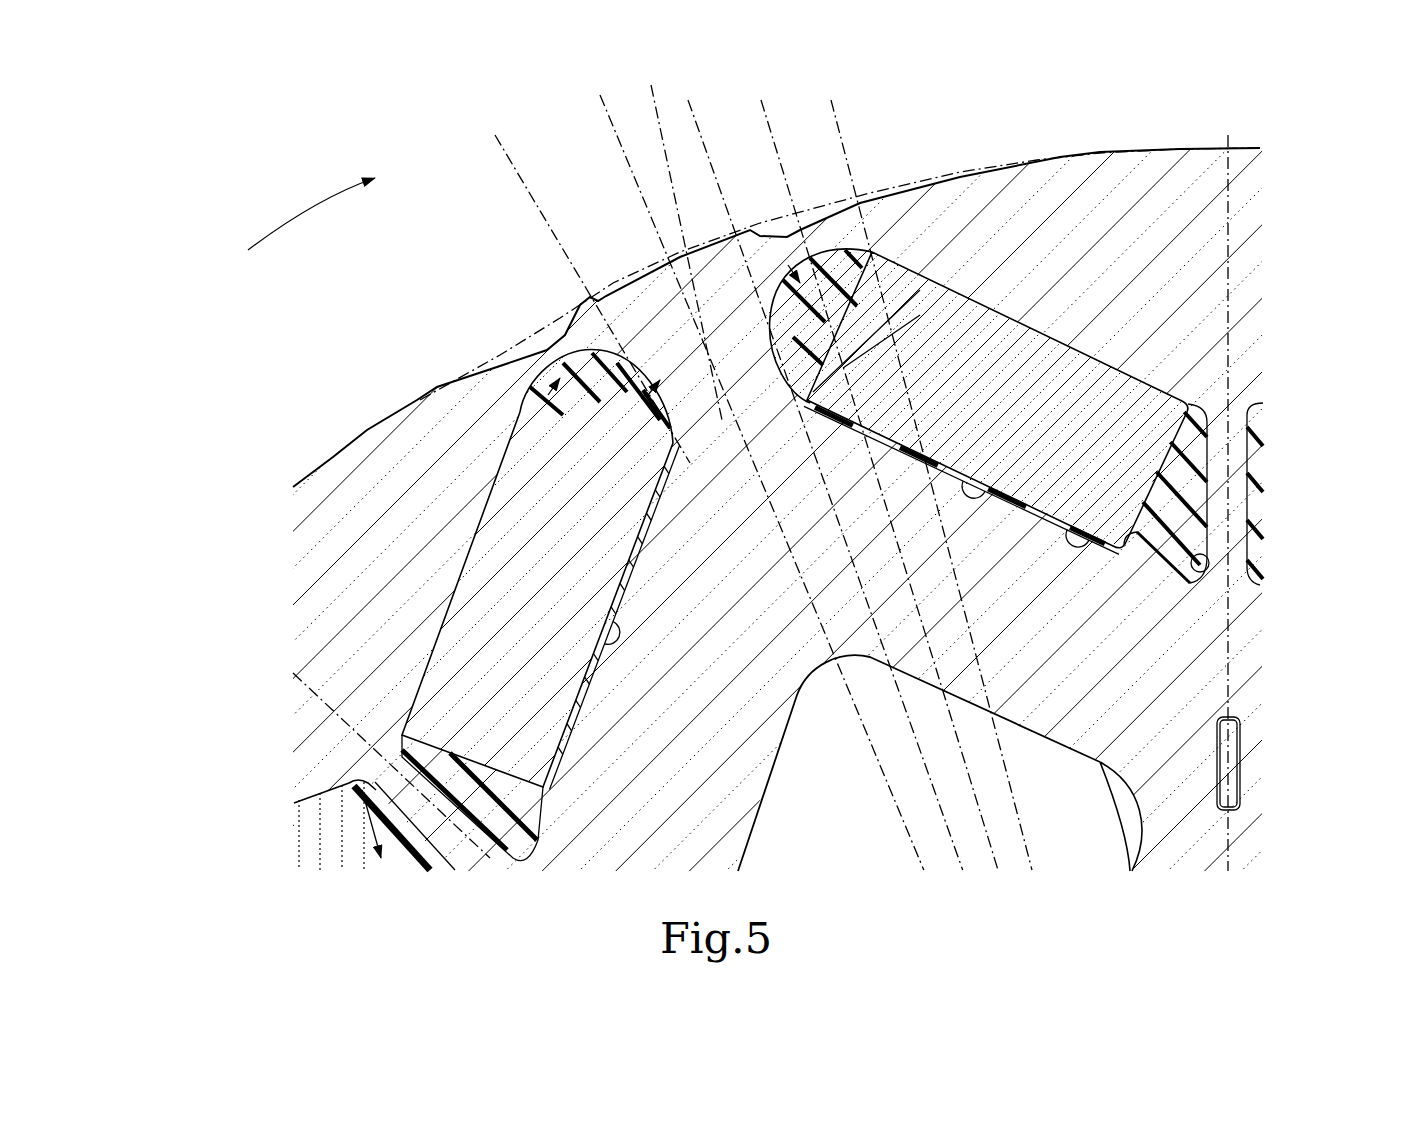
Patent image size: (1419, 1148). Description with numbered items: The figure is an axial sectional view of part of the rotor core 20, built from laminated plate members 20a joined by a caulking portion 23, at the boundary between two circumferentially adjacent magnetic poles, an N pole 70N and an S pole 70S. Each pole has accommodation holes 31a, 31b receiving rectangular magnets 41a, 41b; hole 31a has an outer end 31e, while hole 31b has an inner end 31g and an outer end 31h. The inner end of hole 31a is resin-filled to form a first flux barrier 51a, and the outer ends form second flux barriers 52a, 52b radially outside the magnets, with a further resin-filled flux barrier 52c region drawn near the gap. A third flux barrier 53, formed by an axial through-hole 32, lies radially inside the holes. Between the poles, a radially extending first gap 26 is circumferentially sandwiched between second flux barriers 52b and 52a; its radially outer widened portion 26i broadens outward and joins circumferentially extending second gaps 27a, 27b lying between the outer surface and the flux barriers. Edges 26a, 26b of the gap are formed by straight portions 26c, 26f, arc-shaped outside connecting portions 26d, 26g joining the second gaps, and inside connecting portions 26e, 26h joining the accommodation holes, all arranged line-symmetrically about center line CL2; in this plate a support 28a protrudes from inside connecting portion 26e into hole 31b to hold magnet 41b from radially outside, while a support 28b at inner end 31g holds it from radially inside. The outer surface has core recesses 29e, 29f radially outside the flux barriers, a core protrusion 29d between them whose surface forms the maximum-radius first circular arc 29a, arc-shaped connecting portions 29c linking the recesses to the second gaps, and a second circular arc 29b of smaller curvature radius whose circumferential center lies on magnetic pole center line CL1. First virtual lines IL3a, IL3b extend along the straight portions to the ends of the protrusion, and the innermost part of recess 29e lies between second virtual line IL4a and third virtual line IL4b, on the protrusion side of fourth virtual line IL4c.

The rotor core 20 is at (1262, 145).
The plate member 20a is at (1200, 160).
The caulking portion 23 is at (1238, 752).
The first gap 26 is at (497, 522).
The edge 26a is at (890, 300).
The edge 26b is at (630, 428).
The straight portion 26c is at (770, 342).
The outside connecting portion 26d is at (770, 297).
The inside connecting portion 26e is at (810, 398).
The straight portion 26f is at (645, 424).
The outside connecting portion 26g is at (663, 372).
The inside connecting portion 26h is at (690, 452).
The widened portion 26i is at (716, 322).
The second gap 27a is at (870, 196).
The second gap 27b is at (563, 316).
The support 28a is at (907, 350).
The support 28b is at (1248, 405).
The first circular arc 29a is at (635, 292).
The second circular arc 29b is at (958, 167).
The connecting portion 29c is at (585, 330).
The core protrusion 29d is at (613, 300).
The core recess 29e is at (877, 277).
The core recess 29f is at (575, 338).
The accommodation hole 31a is at (507, 553).
The accommodation hole 31b is at (962, 308).
The outer end 31e is at (615, 435).
The inner end 31g is at (1201, 572).
The outer end 31h is at (898, 305).
The through-hole 32 is at (1104, 766).
The magnet 41a is at (507, 503).
The magnet 41b is at (1095, 383).
The first flux barrier 51a is at (440, 764).
The second flux barrier 52a is at (560, 440).
The second flux barrier 52b is at (797, 282).
The cavity 52c is at (686, 430).
The third flux barrier 53 is at (840, 773).
The magnetic pole 70N is at (1076, 147).
The magnetic pole 70S is at (313, 463).
The magnetic pole center line CL1 is at (1232, 196).
The center line CL2 is at (622, 150).
The first virtual line IL3a is at (735, 122).
The first virtual line IL3b is at (522, 185).
The second virtual line IL4a is at (703, 143).
The third virtual line IL4b is at (855, 112).
The fourth virtual line IL4c is at (787, 122).